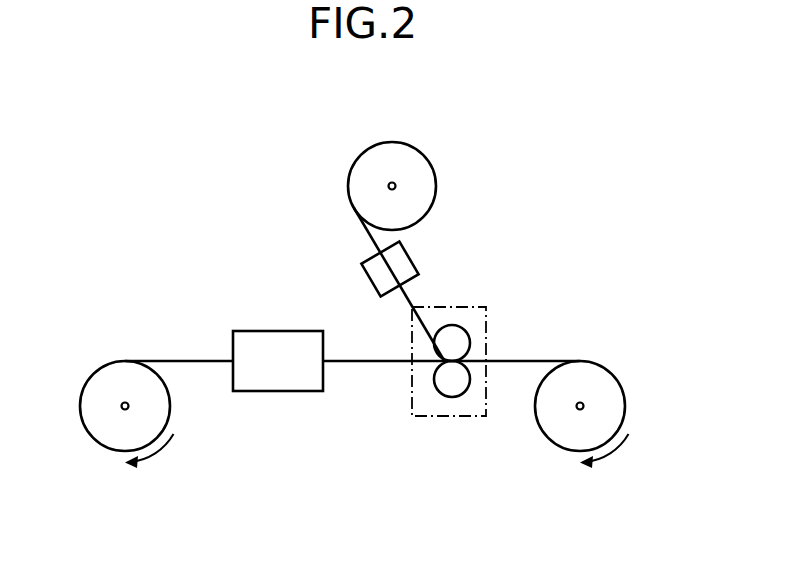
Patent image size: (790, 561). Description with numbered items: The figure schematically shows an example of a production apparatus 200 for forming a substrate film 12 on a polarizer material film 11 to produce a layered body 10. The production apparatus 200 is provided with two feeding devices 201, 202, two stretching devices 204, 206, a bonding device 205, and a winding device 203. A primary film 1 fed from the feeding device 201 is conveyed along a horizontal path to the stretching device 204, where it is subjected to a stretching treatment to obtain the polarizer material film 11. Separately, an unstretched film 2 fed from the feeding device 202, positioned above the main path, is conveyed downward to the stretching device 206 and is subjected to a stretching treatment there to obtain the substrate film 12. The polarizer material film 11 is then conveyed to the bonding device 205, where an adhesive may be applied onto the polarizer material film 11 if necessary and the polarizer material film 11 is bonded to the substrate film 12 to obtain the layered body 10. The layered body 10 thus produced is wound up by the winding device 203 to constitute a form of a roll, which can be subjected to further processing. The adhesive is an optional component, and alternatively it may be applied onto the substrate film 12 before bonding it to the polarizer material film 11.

The primary film 1 is at (182, 360).
The unstretched film 2 is at (366, 233).
The layered body 10 is at (535, 360).
The polarizer material film 11 is at (348, 358).
The substrate film 12 is at (412, 300).
The production apparatus 200 is at (243, 272).
The feeding device 201 is at (105, 447).
The feeding device 202 is at (417, 148).
The winding device 203 is at (565, 450).
The stretching device 204 is at (279, 393).
The bonding device 205 is at (451, 417).
The stretching device 206 is at (412, 260).